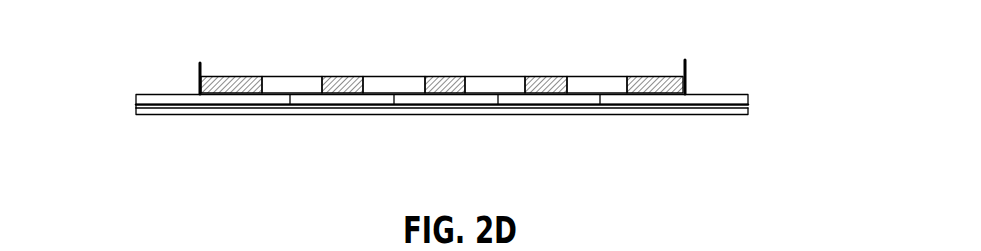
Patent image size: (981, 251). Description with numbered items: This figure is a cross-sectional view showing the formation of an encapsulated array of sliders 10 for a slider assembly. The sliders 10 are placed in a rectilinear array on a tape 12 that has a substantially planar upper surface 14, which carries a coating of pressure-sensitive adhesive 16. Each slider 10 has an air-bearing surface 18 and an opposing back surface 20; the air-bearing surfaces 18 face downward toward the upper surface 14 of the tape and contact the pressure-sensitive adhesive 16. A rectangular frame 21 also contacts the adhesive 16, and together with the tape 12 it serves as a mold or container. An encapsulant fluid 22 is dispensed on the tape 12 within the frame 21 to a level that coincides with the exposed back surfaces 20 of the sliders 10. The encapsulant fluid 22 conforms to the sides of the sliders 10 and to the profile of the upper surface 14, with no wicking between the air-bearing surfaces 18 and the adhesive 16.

The slider 10 is at (265, 84).
The tape 12 is at (748, 105).
The upper surface 14 is at (160, 108).
The pressure-sensitive adhesive 16 is at (748, 97).
The air-bearing surface 18 is at (290, 104).
The back surface 20 is at (293, 76).
The rectangular frame 21 is at (198, 82).
The encapsulant fluid 22 is at (655, 79).